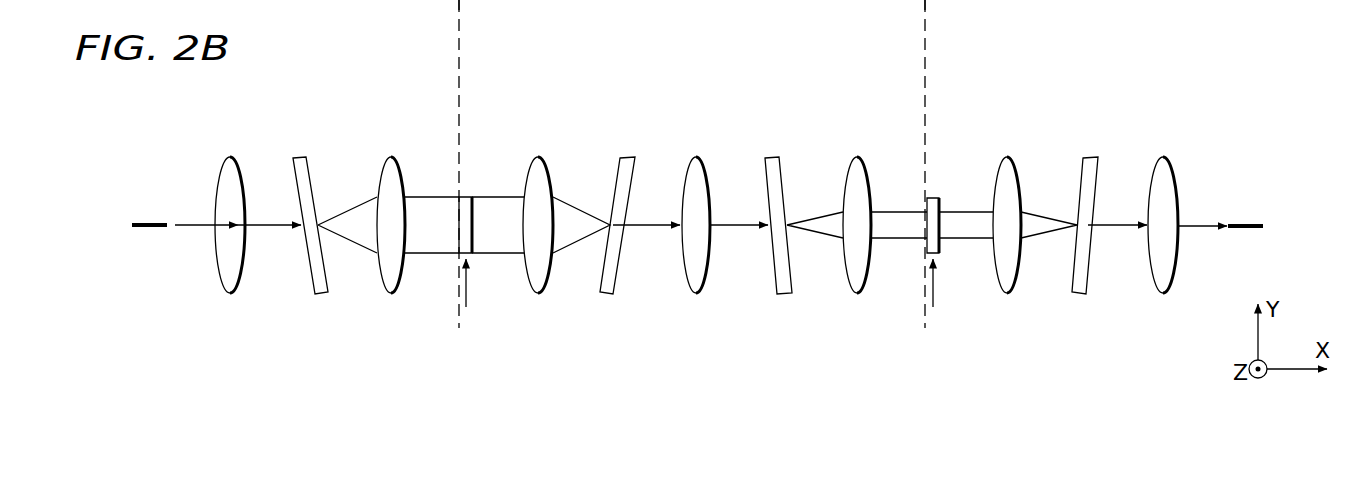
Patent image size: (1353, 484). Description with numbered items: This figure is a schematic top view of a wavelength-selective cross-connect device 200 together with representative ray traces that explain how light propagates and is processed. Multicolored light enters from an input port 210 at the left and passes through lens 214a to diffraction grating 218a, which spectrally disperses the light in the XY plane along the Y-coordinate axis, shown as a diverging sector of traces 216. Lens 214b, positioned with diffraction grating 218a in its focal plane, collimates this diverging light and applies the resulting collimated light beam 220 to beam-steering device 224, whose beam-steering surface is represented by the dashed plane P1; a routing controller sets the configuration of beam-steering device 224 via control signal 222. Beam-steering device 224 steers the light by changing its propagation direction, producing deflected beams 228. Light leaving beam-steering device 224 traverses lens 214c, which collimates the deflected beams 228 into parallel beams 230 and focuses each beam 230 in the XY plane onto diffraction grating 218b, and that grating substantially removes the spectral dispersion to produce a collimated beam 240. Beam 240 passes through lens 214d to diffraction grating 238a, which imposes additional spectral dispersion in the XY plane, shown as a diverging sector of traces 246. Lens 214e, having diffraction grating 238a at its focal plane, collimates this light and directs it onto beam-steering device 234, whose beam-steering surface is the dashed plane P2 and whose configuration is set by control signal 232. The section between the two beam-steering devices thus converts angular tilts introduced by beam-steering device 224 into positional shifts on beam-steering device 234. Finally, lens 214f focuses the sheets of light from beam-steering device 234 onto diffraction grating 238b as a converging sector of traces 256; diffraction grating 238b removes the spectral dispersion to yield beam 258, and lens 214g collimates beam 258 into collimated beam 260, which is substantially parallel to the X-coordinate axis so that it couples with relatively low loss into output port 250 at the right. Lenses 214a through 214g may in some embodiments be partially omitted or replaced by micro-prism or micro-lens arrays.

The WSXC device 200 is at (166, 97).
The input port 210 is at (149, 222).
The lens 214a is at (229, 294).
The lens 214b is at (390, 294).
The lens 214c is at (537, 294).
The lens 214d is at (695, 294).
The lens 214e is at (856, 294).
The lens 214f is at (1006, 294).
The lens 214g is at (1162, 294).
The diverging sector of traces 216 is at (351, 194).
The diffraction grating 218a is at (298, 156).
The diffraction grating 218b is at (625, 156).
The collimated light beam 220 is at (424, 188).
The control signal 222 is at (468, 288).
The beam-steering device 224 is at (466, 195).
The deflected beams 228 is at (500, 188).
The parallel beams 230 is at (578, 198).
The control signal 232 is at (935, 288).
The beam-steering device 234 is at (935, 199).
The diffraction grating 238a is at (770, 156).
The diffraction grating 238b is at (1090, 156).
The beams 240 is at (656, 222).
The diverging sector of traces 246 is at (816, 206).
The output port 250 is at (1247, 223).
The converging sector of traces 256 is at (1047, 206).
The beams 258 is at (1119, 222).
The collimated beams 260 is at (1199, 222).
The plane P1 is at (457, 4).
The plane P2 is at (927, 4).